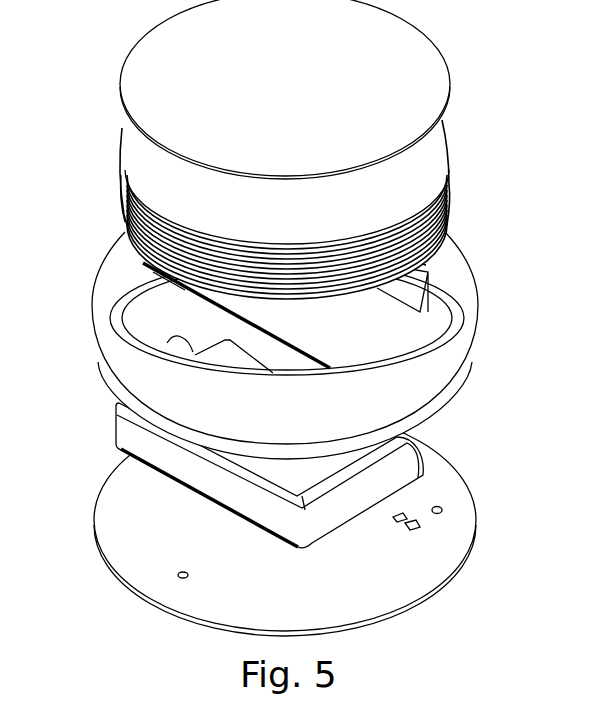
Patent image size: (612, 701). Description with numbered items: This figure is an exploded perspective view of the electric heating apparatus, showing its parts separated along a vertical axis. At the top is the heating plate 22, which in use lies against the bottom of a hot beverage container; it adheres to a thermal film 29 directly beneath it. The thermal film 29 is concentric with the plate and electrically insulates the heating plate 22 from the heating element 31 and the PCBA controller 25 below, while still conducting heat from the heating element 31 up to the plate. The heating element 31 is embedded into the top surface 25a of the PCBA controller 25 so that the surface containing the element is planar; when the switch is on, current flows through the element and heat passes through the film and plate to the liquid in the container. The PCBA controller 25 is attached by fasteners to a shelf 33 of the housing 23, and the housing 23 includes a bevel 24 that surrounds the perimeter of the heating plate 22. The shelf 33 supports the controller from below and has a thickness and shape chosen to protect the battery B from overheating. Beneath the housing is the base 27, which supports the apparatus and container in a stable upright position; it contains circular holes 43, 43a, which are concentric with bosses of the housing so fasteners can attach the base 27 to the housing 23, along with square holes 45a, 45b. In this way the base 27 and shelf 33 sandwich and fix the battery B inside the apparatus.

The heating plate 22 is at (407, 72).
The thermal film 29 is at (413, 175).
The PCBA controller 25 is at (449, 205).
The top surface 25a is at (125, 198).
The heating element 31 is at (418, 227).
The bevel 24 is at (115, 272).
The shelf 33 is at (370, 335).
The housing 23 is at (453, 333).
The battery B is at (400, 473).
The square hole 45a is at (400, 513).
The square hole 45b is at (422, 525).
The circular hole 43 is at (178, 577).
The circular hole 43a is at (444, 508).
The base 27 is at (433, 552).